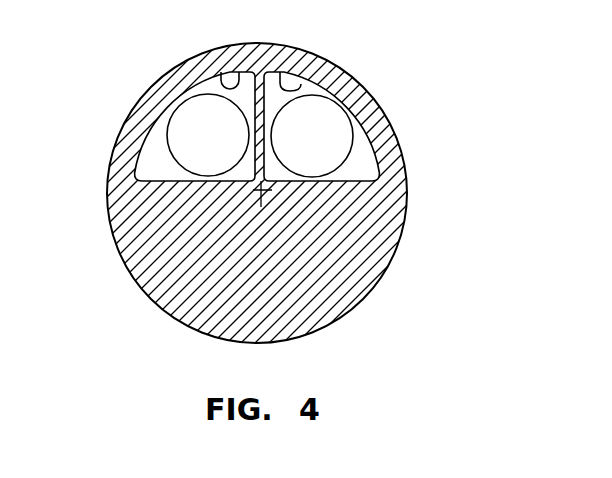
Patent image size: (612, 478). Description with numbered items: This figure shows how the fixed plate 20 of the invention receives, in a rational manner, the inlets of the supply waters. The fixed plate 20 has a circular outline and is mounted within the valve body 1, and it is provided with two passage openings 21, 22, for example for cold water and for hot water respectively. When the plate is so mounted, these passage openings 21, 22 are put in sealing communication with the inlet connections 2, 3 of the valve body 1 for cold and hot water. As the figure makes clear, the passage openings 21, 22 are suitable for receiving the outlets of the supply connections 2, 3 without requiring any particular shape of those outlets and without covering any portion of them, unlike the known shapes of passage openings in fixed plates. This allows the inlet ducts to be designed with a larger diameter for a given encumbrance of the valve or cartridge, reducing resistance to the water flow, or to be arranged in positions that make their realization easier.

The valve body 1 is at (153, 163).
The inlet connection 2 is at (221, 146).
The inlet connection 3 is at (322, 146).
The fixed plate 20 is at (355, 227).
The passage opening 21 is at (233, 88).
The passage opening 22 is at (314, 72).